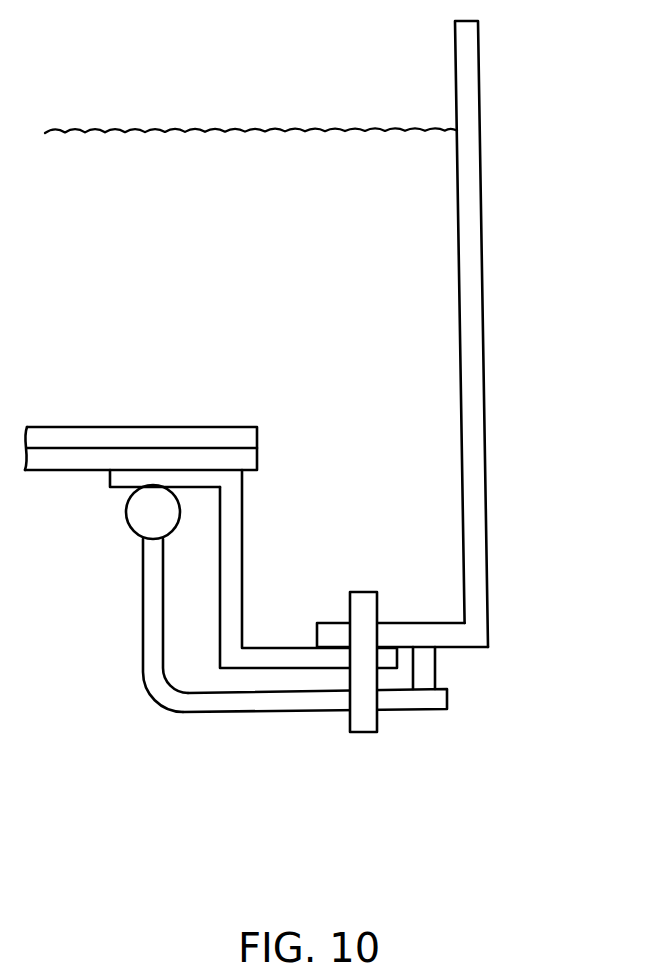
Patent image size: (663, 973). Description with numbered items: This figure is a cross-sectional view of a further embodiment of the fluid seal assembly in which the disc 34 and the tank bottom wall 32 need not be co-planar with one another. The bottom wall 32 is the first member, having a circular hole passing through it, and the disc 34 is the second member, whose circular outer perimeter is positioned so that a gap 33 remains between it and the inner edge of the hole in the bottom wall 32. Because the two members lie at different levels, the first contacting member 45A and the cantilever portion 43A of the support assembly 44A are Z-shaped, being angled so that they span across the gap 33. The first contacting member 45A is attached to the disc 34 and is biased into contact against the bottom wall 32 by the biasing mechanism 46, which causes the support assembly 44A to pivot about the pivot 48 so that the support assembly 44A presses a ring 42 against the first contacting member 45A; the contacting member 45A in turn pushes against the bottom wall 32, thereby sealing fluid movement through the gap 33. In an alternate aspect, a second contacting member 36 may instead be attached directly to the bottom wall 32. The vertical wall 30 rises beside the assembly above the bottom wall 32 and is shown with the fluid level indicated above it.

The wall 30 is at (474, 367).
The bottom wall 32 is at (463, 633).
The gap 33 is at (326, 498).
The disc 34 is at (73, 432).
The second contacting member 36 is at (201, 455).
The ring 42 is at (138, 518).
The cantilever portion 43A is at (148, 642).
The support assembly 44A is at (215, 714).
The first contacting member 45A is at (233, 568).
The biasing mechanism 46 is at (365, 720).
The pivot 48 is at (423, 680).